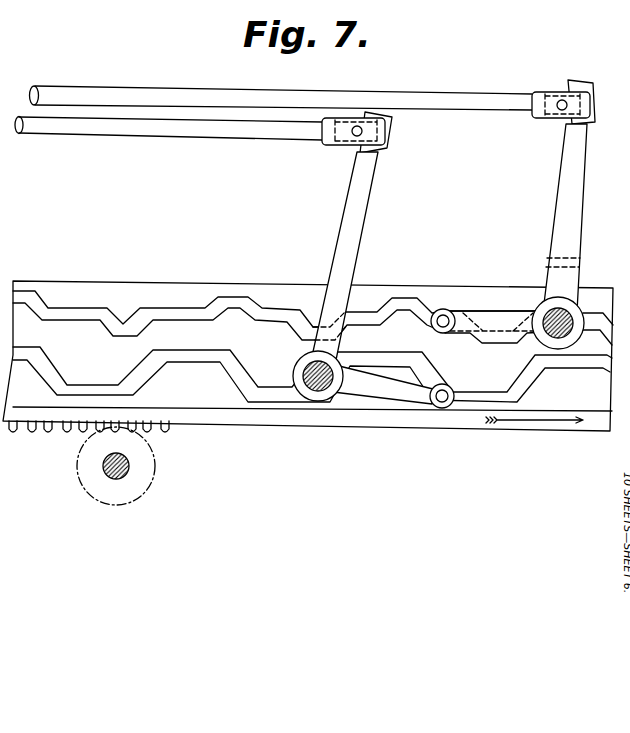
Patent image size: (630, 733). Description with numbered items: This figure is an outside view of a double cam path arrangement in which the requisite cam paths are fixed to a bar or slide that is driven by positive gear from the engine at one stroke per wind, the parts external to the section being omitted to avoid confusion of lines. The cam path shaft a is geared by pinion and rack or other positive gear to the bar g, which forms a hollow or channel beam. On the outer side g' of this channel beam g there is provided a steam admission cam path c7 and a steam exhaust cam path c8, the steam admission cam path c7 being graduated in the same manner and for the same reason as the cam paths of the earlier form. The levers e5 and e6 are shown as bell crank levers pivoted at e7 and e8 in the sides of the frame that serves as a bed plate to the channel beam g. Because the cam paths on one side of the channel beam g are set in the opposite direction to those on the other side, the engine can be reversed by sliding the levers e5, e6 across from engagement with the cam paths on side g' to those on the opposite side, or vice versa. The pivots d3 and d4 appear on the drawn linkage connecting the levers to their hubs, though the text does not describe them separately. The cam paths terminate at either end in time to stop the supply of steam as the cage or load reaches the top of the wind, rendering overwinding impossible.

The steam admission cam path c7 is at (153, 315).
The steam exhaust cam path c8 is at (267, 398).
The outer side of channel beam g' is at (250, 251).
The bar forming a hollow or channel beam g is at (369, 449).
The lever e5 is at (576, 212).
The lever e6 is at (364, 211).
The pivot of lever e7 is at (572, 304).
The pivot of lever e8 is at (316, 382).
The upper pivot link d3 is at (445, 309).
The lower pivot link d4 is at (442, 404).
The cam path shaft a is at (110, 477).